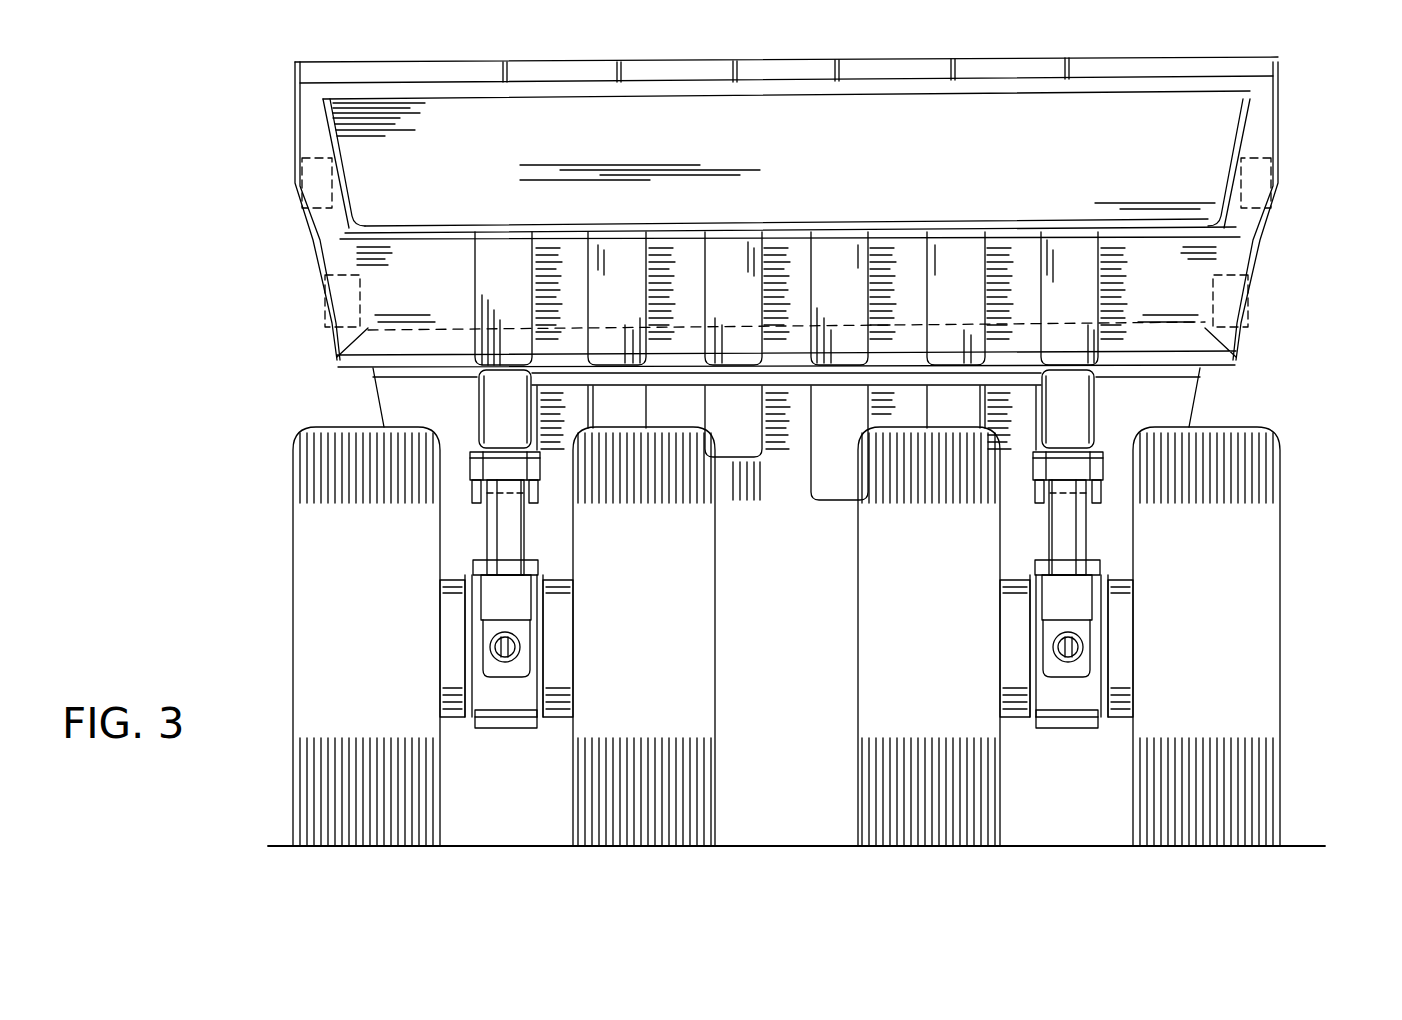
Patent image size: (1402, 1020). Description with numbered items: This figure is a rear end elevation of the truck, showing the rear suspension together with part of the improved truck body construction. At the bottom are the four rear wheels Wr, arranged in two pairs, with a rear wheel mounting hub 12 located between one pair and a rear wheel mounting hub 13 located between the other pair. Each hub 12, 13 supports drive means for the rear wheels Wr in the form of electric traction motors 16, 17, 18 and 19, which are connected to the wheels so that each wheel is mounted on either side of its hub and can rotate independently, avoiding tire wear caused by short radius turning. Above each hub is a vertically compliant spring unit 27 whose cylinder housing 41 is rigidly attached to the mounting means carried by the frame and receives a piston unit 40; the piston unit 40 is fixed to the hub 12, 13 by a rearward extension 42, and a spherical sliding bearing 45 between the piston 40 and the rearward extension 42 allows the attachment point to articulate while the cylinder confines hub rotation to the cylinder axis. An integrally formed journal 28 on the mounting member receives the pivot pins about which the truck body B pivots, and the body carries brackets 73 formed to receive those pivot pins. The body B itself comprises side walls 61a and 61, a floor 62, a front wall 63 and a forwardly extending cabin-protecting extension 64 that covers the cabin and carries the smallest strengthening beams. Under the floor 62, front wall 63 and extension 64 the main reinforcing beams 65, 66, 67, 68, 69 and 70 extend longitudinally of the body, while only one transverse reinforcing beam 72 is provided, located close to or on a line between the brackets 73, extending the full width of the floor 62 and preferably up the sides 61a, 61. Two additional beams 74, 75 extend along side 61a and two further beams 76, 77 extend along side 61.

The truck body B is at (1283, 130).
The forwardly extending cabin-protecting extension 64 is at (903, 68).
The side wall 61 is at (1230, 178).
The side wall 61a is at (347, 181).
The floor 62 is at (935, 222).
The front wall 63 is at (848, 196).
The main reinforcing beam 65 is at (1080, 302).
The main reinforcing beam 66 is at (963, 306).
The main reinforcing beam 67 is at (855, 306).
The main reinforcing beam 68 is at (735, 285).
The main reinforcing beam 69 is at (613, 282).
The main reinforcing beam 70 is at (497, 278).
The transverse reinforcing beam 72 is at (1200, 338).
The bracket 73 is at (490, 405).
The additional beam 74 is at (292, 182).
The additional beam 75 is at (345, 302).
The additional beam 76 is at (1287, 182).
The additional beam 77 is at (1248, 312).
The spring unit 27 is at (527, 534).
The journal 28 is at (472, 496).
The cylinder housing 41 is at (498, 528).
The piston unit 40 is at (508, 597).
The spherical sliding bearing 45 is at (523, 642).
The rearward extension 42 is at (497, 645).
The rear wheel mounting hub 12 is at (510, 705).
The rear wheel mounting hub 13 is at (1065, 702).
The electric traction motor 16 is at (452, 662).
The electric traction motor 17 is at (560, 682).
The electric traction motor 18 is at (1017, 650).
The electric traction motor 19 is at (1125, 672).
The rear wheel Wr is at (330, 602).